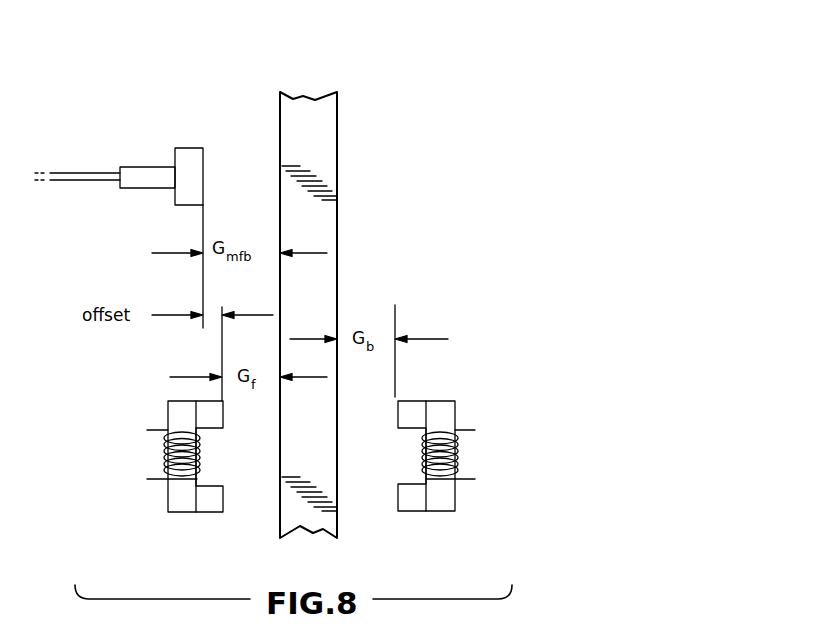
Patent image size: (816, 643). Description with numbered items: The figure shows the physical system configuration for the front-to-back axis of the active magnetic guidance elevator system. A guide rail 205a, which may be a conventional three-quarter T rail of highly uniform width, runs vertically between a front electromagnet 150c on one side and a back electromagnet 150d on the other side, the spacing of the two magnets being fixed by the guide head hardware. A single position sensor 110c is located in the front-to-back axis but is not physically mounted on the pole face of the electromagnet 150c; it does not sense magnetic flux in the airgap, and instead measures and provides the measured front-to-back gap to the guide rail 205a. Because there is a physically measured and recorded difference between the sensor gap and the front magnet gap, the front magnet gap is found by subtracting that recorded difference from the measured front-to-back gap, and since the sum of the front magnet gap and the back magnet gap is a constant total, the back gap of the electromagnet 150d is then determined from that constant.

The position sensor 110c is at (190, 148).
The guide rail 205a is at (302, 93).
The front electromagnet 150c is at (206, 503).
The back electromagnet 150d is at (419, 505).